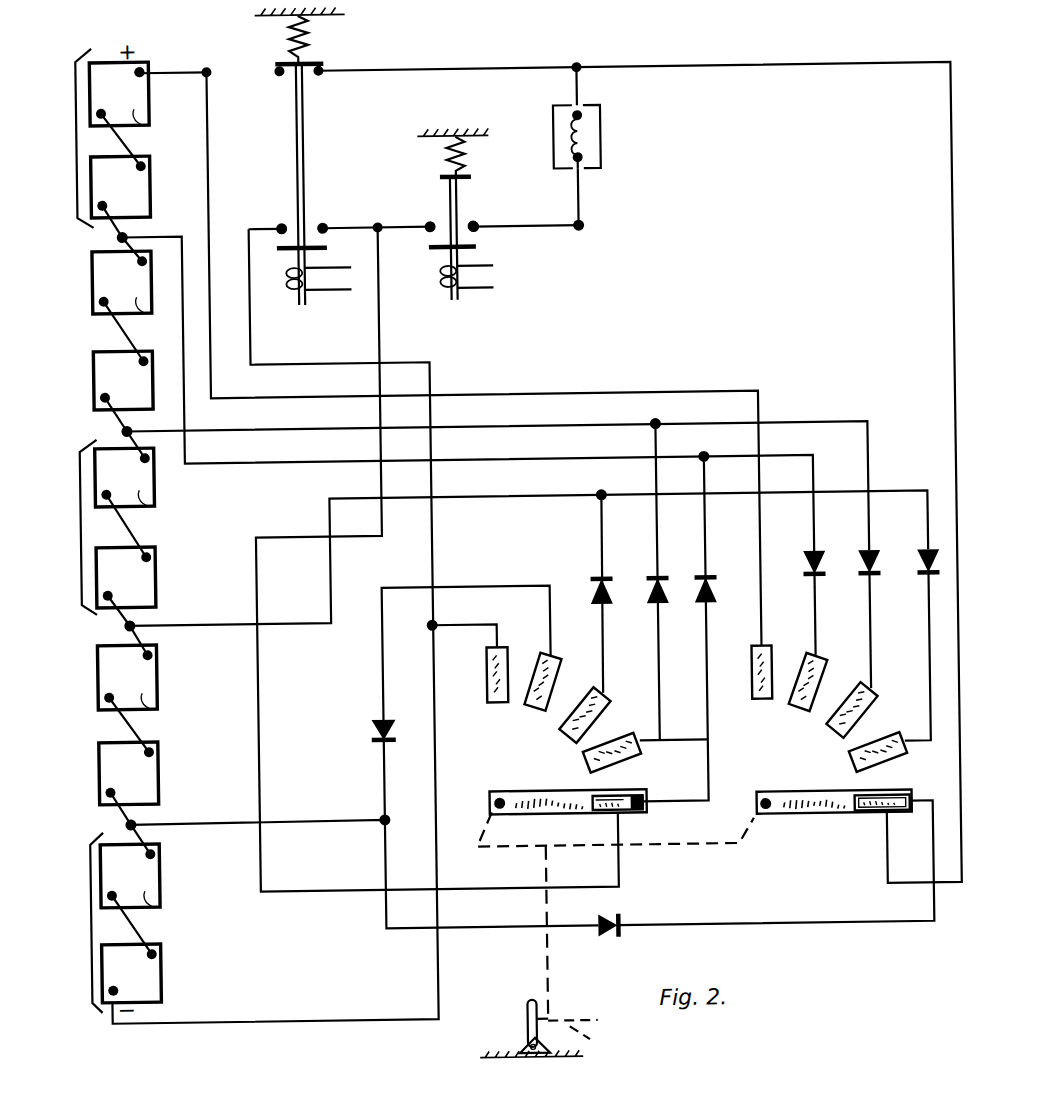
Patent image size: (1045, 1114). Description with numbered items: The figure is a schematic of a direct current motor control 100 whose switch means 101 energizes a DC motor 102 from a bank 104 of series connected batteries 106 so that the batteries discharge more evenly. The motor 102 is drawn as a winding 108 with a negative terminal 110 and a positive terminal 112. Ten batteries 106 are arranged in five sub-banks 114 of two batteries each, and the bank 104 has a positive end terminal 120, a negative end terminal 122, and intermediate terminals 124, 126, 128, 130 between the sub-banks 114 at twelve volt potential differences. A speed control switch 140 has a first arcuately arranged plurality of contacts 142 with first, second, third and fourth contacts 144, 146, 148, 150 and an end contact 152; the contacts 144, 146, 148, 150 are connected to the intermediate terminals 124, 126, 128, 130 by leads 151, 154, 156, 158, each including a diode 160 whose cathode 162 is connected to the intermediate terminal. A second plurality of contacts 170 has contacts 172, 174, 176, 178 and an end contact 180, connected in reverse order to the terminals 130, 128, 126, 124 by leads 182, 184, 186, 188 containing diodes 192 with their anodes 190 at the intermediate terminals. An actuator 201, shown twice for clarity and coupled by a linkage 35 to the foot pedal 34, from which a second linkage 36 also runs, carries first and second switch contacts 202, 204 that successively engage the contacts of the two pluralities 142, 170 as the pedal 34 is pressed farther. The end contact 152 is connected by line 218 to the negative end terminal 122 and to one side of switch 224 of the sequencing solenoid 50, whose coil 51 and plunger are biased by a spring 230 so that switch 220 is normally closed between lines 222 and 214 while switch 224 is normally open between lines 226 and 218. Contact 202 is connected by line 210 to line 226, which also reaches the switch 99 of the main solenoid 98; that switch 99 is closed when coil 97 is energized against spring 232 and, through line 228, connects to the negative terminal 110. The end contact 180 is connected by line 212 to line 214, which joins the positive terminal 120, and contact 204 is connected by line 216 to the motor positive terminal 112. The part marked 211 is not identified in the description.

The accelerator pedal 34 is at (521, 1016).
The linkage 35 is at (538, 950).
The linkage 36 is at (581, 1039).
The sequencing solenoid 50 is at (366, 147).
The solenoid coil 51 is at (331, 292).
The solenoid coil 97 is at (489, 287).
The main solenoid 98 is at (463, 312).
The switch 99 is at (487, 241).
The DC motor control 100 is at (359, 1036).
The switch means 101 is at (707, 292).
The DC motor 102 is at (607, 154).
The battery bank 104 is at (103, 338).
The batteries 106 is at (147, 153).
The winding 108 is at (592, 128).
The negative terminal 110 is at (589, 229).
The positive terminal 112 is at (590, 66).
The sub-banks 114 is at (80, 140).
The positive end terminal 120 is at (150, 61).
The negative end terminal 122 is at (117, 991).
The first intermediate terminal 124 is at (132, 231).
The second intermediate terminal 126 is at (124, 428).
The third intermediate terminal 128 is at (136, 620).
The fourth intermediate terminal 130 is at (136, 820).
The speed control switch 140 is at (740, 890).
The first plurality of contacts 142 is at (492, 776).
The first contact 144 is at (627, 796).
The second contact 146 is at (582, 760).
The third contact 148 is at (556, 727).
The fourth contact 150 is at (528, 708).
The lead 151 is at (706, 700).
The end contact 152 is at (484, 682).
The lead 154 is at (660, 678).
The lead 156 is at (604, 678).
The lead 158 is at (507, 585).
The diodes 160 is at (376, 724).
The cathodes 162 is at (380, 717).
The second plurality of contacts 170 is at (760, 779).
The first contact 172 is at (890, 794).
The second contact 174 is at (848, 756).
The third contact 176 is at (825, 727).
The fourth contact 178 is at (788, 709).
The end contact 180 is at (750, 655).
The lead 182 is at (851, 924).
The lead 184 is at (926, 654).
The lead 186 is at (864, 627).
The lead 188 is at (809, 627).
The anodes 190 is at (868, 553).
The diodes 192 is at (810, 562).
The actuator 201 is at (578, 832).
The first switch contact 202 is at (636, 815).
The second switch contact 204 is at (866, 820).
The line 210 is at (385, 330).
The relay armature 211 is at (484, 205).
The line 212 is at (216, 148).
The line 214 is at (182, 69).
The line 216 is at (819, 66).
The line 218 is at (308, 361).
The solenoid switch 220 is at (311, 76).
The line 222 is at (490, 67).
The solenoid switch 224 is at (286, 214).
The line 226 is at (405, 222).
The line 228 is at (559, 224).
The spring 230 is at (318, 39).
The spring 232 is at (472, 154).